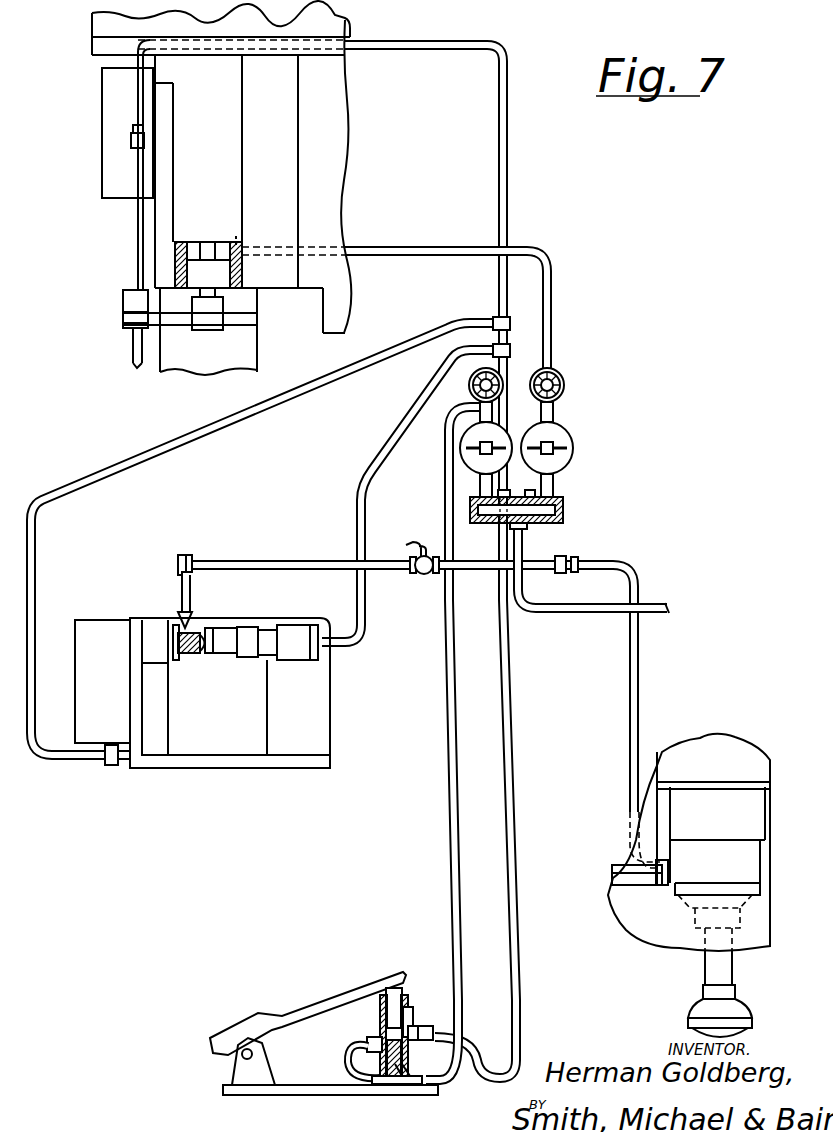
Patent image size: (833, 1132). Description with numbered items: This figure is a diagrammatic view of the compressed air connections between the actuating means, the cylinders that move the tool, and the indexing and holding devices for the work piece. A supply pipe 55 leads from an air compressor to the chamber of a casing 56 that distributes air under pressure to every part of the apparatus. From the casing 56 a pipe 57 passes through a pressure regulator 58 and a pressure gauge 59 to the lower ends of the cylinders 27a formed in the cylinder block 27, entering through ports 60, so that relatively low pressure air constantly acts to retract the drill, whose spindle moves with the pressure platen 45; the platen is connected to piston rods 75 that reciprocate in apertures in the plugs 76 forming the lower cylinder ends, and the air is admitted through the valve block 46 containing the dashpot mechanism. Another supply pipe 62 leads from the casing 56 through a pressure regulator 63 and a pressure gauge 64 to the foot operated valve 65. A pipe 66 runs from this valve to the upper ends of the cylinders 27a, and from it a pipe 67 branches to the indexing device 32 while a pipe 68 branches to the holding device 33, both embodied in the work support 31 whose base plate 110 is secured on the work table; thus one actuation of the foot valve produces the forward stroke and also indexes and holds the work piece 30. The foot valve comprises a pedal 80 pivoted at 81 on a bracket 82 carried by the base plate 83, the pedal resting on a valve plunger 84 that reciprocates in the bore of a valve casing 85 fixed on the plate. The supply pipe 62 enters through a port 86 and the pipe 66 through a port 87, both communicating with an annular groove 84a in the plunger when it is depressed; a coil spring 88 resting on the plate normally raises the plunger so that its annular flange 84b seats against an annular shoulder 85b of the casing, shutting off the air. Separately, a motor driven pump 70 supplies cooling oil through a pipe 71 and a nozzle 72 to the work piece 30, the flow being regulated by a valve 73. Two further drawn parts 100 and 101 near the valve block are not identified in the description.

The cylinder block 27 is at (227, 164).
The cylinders 27a is at (176, 254).
The work piece 30 is at (192, 670).
The work support 31 is at (222, 736).
The indexing device 32 is at (113, 684).
The holding device 33 is at (308, 712).
The pressure platen 45 is at (178, 321).
The valve block 46 is at (103, 126).
The supply pipe 55 is at (660, 606).
The casing 56 is at (565, 507).
The pipe 57 is at (553, 488).
The pressure regulator 58 is at (562, 441).
The pressure gauge 59 is at (565, 384).
The ports 60 is at (237, 240).
The supply pipe 62 is at (470, 488).
The pressure regulator 63 is at (468, 459).
The pressure gauge 64 is at (472, 387).
The foot operated valve 65 is at (333, 1029).
The pipe 66 is at (508, 179).
The pipe 67 is at (221, 432).
The pipe 68 is at (385, 443).
The pump 70 is at (740, 816).
The pipe 71 is at (645, 661).
The nozzle 72 is at (189, 617).
The valve 73 is at (419, 546).
The piston rods 75 is at (206, 246).
The plugs 76 is at (214, 276).
The pedal 80 is at (297, 1006).
The pivot 81 is at (236, 1069).
The bracket 82 is at (296, 1069).
The base plate 83 is at (298, 1090).
The valve plunger 84 is at (403, 999).
The annular groove 84a is at (383, 1036).
The annular flange 84b is at (420, 1084).
The valve casing 85 is at (410, 1013).
The annular shoulder 85b is at (383, 1073).
The port 86 is at (380, 1051).
The port 87 is at (412, 1051).
The coil spring 88 is at (400, 1081).
The rod 100 is at (133, 214).
The coupling 101 is at (125, 304).
The base plate 110 is at (292, 762).